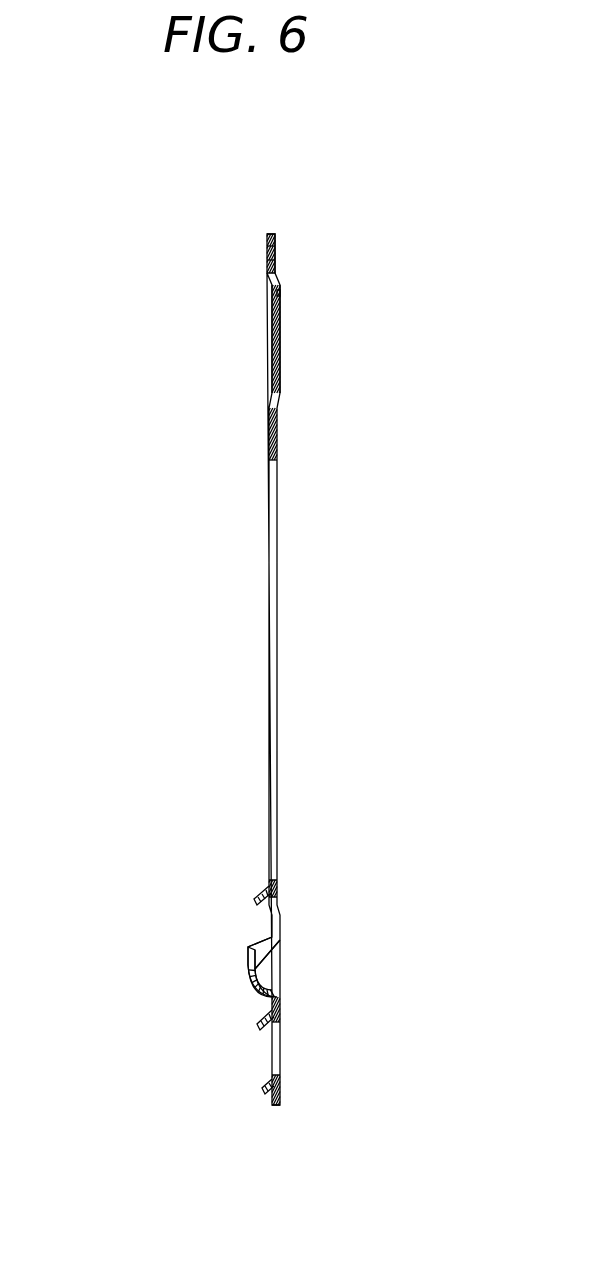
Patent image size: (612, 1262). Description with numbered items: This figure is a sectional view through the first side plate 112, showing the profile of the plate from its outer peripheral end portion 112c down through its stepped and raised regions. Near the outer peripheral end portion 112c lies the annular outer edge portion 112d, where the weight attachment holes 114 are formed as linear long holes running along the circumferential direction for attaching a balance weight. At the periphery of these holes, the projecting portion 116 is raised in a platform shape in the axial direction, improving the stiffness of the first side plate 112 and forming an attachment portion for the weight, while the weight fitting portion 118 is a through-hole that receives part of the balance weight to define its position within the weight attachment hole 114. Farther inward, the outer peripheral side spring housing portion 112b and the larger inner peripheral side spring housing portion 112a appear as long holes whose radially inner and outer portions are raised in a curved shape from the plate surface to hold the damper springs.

The first side plate 112 is at (114, 196).
The inner peripheral side spring housing portion 112a is at (264, 970).
The outer peripheral side spring housing portion 112b is at (279, 1074).
The outer peripheral end portion 112c is at (270, 234).
The outer edge portion 112d is at (273, 300).
The weight attachment hole 114 is at (282, 295).
The projecting portion 116 is at (267, 245).
The weight fitting portion 118 is at (267, 255).